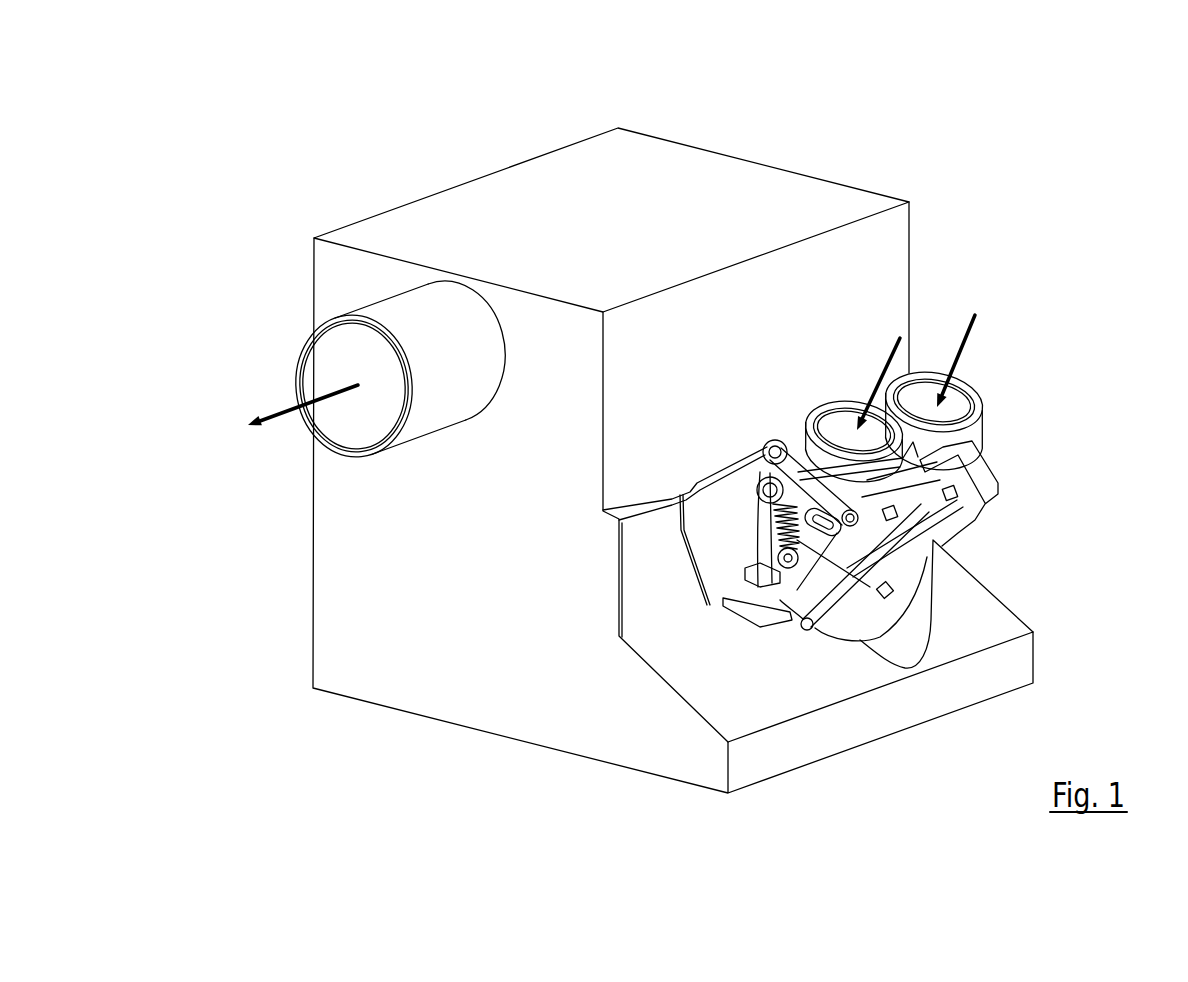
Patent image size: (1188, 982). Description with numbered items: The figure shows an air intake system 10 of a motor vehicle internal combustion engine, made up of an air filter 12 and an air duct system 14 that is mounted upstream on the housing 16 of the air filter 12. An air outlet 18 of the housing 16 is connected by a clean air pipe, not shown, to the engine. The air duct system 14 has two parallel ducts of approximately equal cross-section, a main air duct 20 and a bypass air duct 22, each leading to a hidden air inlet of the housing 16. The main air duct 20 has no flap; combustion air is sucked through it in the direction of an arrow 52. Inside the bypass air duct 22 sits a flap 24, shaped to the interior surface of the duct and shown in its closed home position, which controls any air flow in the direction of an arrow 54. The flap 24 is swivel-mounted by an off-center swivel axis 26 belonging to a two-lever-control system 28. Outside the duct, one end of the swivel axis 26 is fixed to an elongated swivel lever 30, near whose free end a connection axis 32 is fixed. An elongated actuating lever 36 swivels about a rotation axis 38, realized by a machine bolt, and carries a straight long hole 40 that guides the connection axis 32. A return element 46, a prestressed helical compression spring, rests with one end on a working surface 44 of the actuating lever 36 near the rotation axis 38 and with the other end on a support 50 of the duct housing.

The air intake system 10 is at (224, 174).
The air filter 12 is at (490, 172).
The air duct system 14 is at (1020, 480).
The housing 16 is at (387, 228).
The air outlet 18 is at (312, 374).
The main air duct 20 is at (980, 409).
The bypass air duct 22 is at (911, 374).
The flap 24 is at (848, 445).
The swivel axis 26 is at (937, 541).
The two-lever-control system 28 is at (757, 484).
The swivel lever 30 is at (827, 506).
The connection axis 32 is at (785, 582).
The actuating lever 36 is at (788, 440).
The rotation axis 38 is at (763, 498).
The long hole 40 is at (829, 538).
The working surface 44 is at (767, 527).
The return element 46 is at (740, 560).
The support 50 is at (720, 612).
The arrow 52 is at (975, 315).
The arrow 54 is at (897, 338).